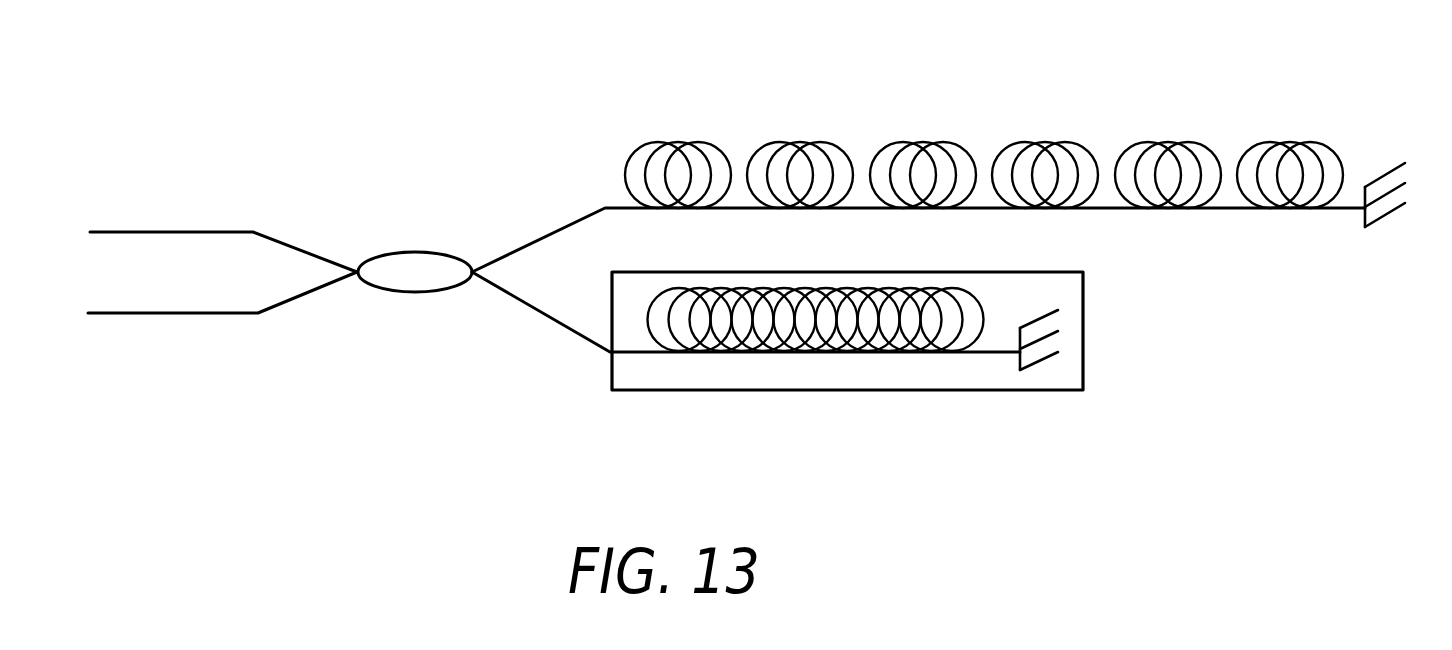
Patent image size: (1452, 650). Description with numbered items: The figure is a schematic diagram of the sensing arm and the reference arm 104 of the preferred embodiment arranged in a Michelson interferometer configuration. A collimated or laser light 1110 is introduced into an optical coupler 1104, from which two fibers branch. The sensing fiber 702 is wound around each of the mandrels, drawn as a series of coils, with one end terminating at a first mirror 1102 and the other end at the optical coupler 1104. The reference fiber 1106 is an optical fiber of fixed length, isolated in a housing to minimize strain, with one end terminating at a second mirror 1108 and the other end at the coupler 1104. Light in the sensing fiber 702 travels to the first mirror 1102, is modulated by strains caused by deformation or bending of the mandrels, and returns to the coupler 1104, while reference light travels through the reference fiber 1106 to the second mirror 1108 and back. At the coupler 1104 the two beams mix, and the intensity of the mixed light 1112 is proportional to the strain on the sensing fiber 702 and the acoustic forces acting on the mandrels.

The mixed light 1112 is at (177, 232).
The collimated or laser light 1110 is at (177, 313).
The optical coupler 1104 is at (423, 252).
The reference fiber 1106 is at (527, 307).
The sensing fiber 702 is at (737, 208).
The first mirror 1102 is at (1382, 170).
The reference arm 104 is at (1085, 327).
The second mirror 1108 is at (1037, 370).